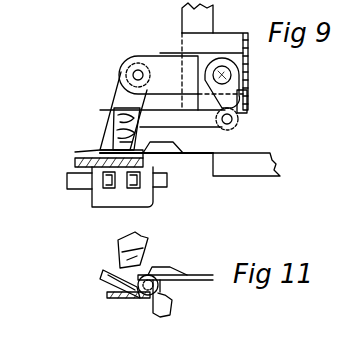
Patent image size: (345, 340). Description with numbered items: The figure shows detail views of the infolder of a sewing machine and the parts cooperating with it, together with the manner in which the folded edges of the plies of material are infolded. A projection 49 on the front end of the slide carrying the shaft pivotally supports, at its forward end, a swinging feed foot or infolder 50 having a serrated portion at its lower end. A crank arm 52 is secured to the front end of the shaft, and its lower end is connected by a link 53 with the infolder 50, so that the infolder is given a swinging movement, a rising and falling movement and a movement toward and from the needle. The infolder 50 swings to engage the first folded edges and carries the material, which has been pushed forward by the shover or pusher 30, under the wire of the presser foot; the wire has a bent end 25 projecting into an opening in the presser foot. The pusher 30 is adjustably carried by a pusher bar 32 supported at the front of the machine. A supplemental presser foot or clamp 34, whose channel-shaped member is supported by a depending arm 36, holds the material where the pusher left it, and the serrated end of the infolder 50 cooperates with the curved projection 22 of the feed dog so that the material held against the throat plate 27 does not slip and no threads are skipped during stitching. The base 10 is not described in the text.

In FIG. 9, the base 10 is at (100, 195).
In FIG. 9, the bent end of wire 25 is at (77, 161).
In FIG. 9, the pusher bar 32 is at (253, 170).
In FIG. 9, the supplemental presser foot or clamp 34 is at (110, 128).
In FIG. 11, the supplemental presser foot or clamp 34 is at (140, 253).
In FIG. 9, the projection 49 is at (165, 62).
In FIG. 9, the swinging feed foot or infolder 50 is at (117, 97).
In FIG. 9, the crank arm 52 is at (237, 75).
In FIG. 9, the link 53 is at (193, 117).
In FIG. 11, the shover or pusher 30 is at (205, 280).
In FIG. 11, the curved projection 22 is at (162, 297).
In FIG. 11, the throat plate 27 is at (125, 315).
In FIG. 11, the depending arm 36 is at (143, 307).